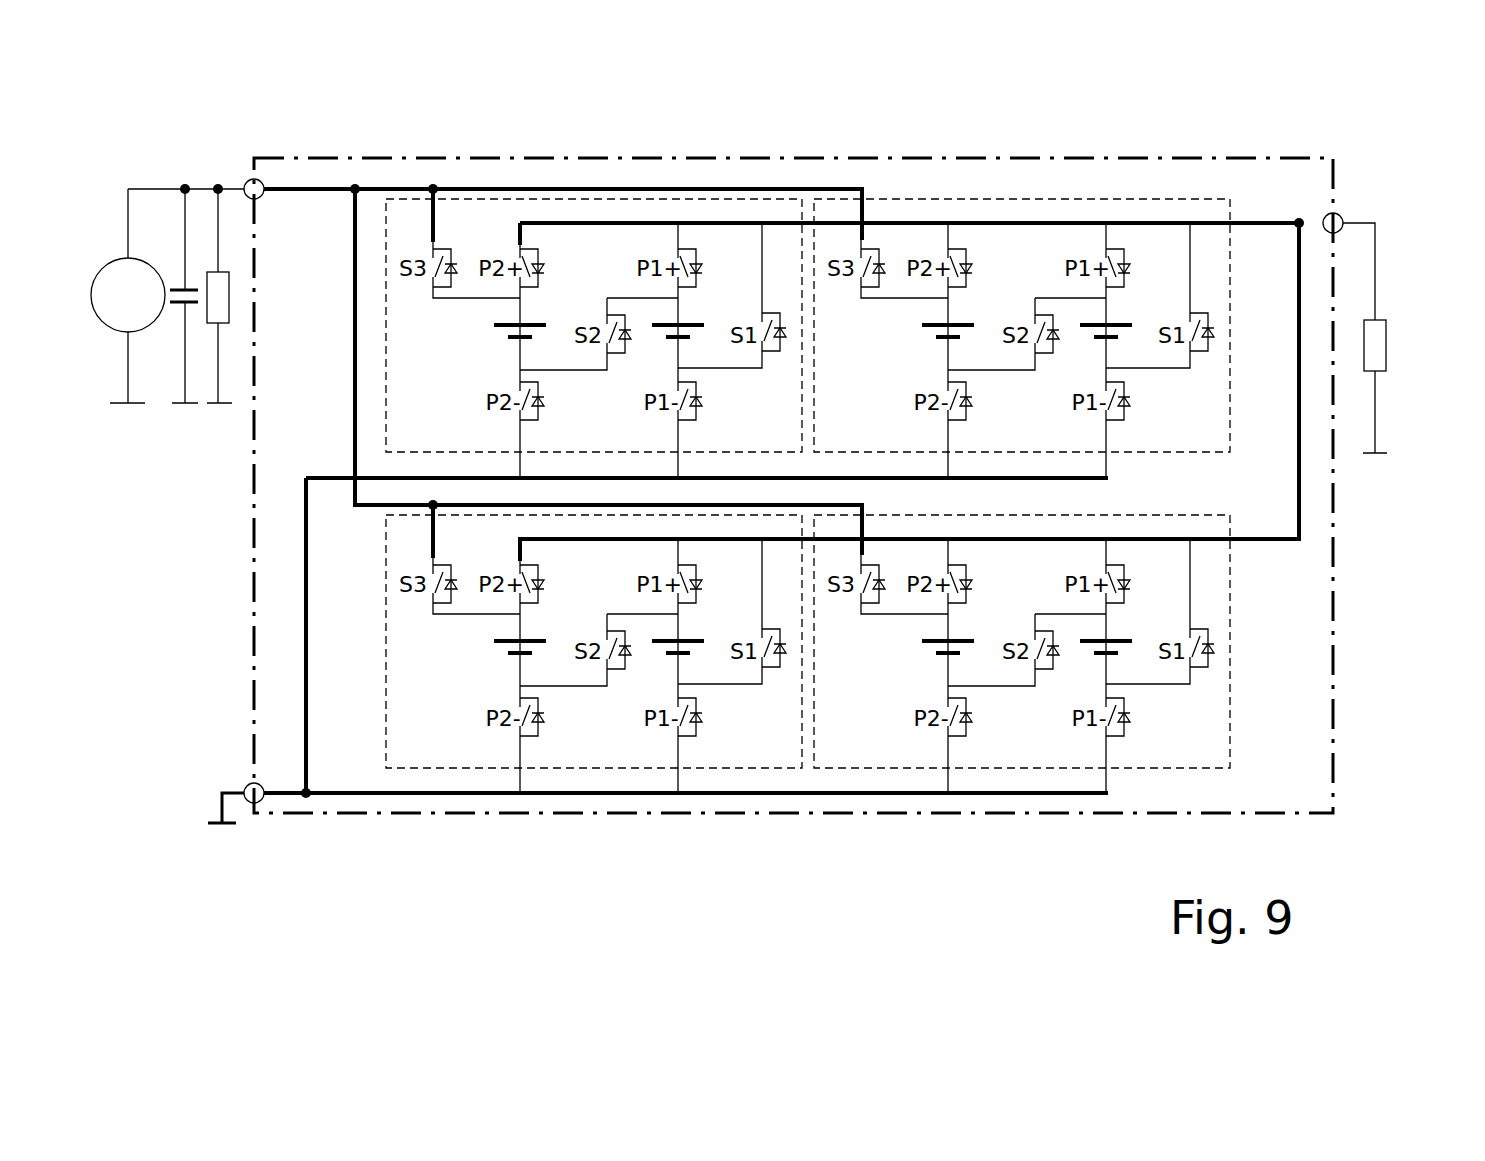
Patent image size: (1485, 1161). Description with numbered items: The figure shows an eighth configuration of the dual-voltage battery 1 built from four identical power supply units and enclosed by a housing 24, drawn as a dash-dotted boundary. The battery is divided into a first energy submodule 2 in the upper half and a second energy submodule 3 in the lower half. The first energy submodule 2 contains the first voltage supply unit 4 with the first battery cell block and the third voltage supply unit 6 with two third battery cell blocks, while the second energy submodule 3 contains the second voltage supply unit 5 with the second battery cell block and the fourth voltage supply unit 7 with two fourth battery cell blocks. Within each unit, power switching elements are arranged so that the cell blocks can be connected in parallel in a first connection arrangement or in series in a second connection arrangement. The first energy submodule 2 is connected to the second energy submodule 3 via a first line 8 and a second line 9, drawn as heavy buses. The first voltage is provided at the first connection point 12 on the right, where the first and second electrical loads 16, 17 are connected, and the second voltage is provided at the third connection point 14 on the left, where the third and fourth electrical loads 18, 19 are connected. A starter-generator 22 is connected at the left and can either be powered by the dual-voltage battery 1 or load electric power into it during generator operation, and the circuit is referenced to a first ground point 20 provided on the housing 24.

The dual-voltage battery 1 is at (738, 459).
The first energy submodule 2 is at (808, 286).
The second energy submodule 3 is at (819, 719).
The first voltage supply unit 4 is at (906, 198).
The second voltage supply unit 5 is at (1067, 654).
The third voltage supply unit 6 is at (393, 223).
The fourth voltage supply unit 7 is at (380, 748).
The first line 8 is at (1300, 508).
The second line 9 is at (355, 318).
The first connection point 12 is at (1336, 212).
The third connection point 14 is at (246, 177).
The first electrical loads 16 is at (1410, 368).
The second electrical loads 17 is at (1372, 342).
The third electrical loads 18 is at (168, 385).
The fourth electrical loads 19 is at (217, 298).
The first ground point 20 is at (249, 784).
The starter-generator 22 is at (128, 295).
The housing 24 is at (1181, 152).